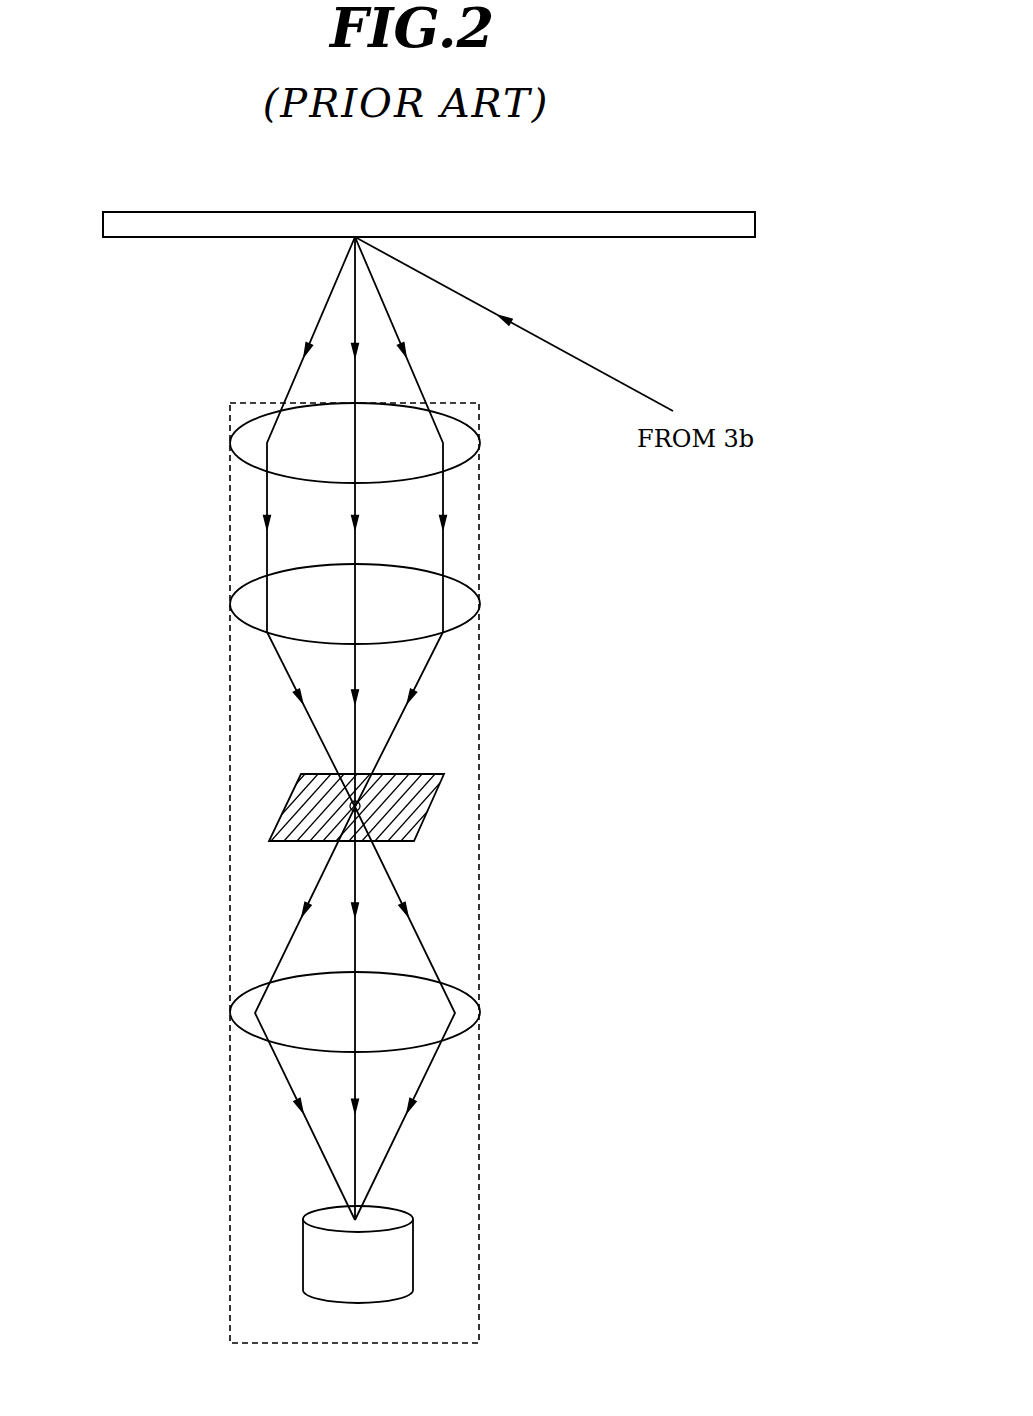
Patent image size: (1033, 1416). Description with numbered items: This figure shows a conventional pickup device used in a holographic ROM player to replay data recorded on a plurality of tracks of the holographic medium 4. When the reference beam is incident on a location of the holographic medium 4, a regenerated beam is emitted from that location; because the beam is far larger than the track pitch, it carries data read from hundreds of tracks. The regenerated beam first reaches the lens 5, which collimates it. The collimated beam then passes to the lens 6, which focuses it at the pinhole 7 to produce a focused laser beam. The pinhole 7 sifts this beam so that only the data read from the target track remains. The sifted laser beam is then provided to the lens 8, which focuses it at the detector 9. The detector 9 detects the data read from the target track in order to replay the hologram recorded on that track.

The holographic medium 4 is at (722, 212).
The lens 5 is at (242, 446).
The lens 6 is at (242, 606).
The pinhole 7 is at (352, 806).
The lens 8 is at (242, 1016).
The detector 9 is at (310, 1262).